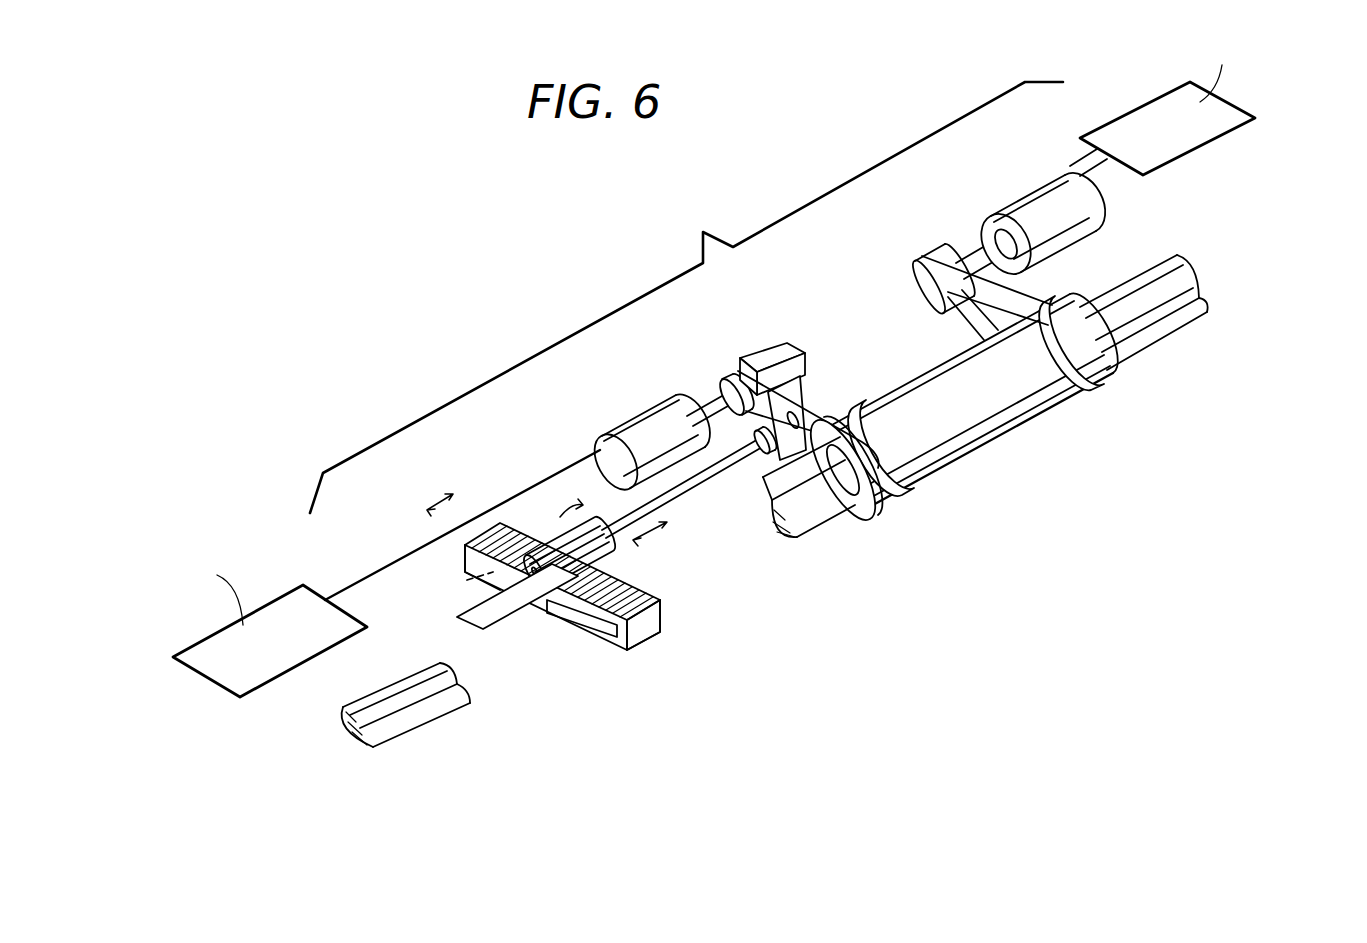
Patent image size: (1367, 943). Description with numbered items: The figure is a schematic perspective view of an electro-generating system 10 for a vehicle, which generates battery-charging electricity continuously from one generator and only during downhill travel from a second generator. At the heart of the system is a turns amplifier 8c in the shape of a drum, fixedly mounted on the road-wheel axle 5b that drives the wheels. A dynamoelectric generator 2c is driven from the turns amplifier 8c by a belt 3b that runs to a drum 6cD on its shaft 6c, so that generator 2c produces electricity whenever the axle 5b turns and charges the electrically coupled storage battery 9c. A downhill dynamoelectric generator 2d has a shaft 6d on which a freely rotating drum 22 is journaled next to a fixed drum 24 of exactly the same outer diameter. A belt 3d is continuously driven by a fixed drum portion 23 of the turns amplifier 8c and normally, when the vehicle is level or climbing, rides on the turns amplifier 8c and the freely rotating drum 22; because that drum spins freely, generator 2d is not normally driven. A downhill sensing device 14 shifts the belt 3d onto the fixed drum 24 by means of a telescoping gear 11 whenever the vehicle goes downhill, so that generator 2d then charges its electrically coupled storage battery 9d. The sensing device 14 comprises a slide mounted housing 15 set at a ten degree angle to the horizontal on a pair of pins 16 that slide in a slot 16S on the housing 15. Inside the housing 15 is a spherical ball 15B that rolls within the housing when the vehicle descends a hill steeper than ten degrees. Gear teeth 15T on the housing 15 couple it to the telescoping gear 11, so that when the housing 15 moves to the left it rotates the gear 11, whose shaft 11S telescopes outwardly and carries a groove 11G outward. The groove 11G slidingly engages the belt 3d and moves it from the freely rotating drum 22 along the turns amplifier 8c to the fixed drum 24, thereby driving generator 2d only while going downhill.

The dynamoelectric generator 2c is at (1090, 210).
The downhill dynamoelectric generator 2d is at (635, 418).
The belt 3b is at (1023, 278).
The belt 3d is at (813, 397).
The road-wheel axle 5b is at (797, 532).
The shaft 6c is at (962, 250).
The drum 6cD is at (920, 300).
The shaft 6d is at (720, 390).
The turns amplifier 8c is at (1013, 437).
The storage battery 9c is at (1197, 143).
The storage battery 9d is at (243, 698).
The electro-generating system 10 is at (1110, 552).
The telescoping gear 11 is at (562, 533).
The groove 11G is at (760, 458).
The shaft 11S is at (688, 492).
The downhill sensing device 14 is at (467, 580).
The slide mounted housing 15 is at (603, 601).
The gear teeth 15T is at (643, 587).
The spherical ball 15B is at (655, 631).
The pins 16 is at (478, 620).
The slot 16S is at (603, 613).
The freely rotating drum 22 is at (753, 373).
The fixed drum portion 23 is at (858, 507).
The fixed drum 24 is at (792, 350).